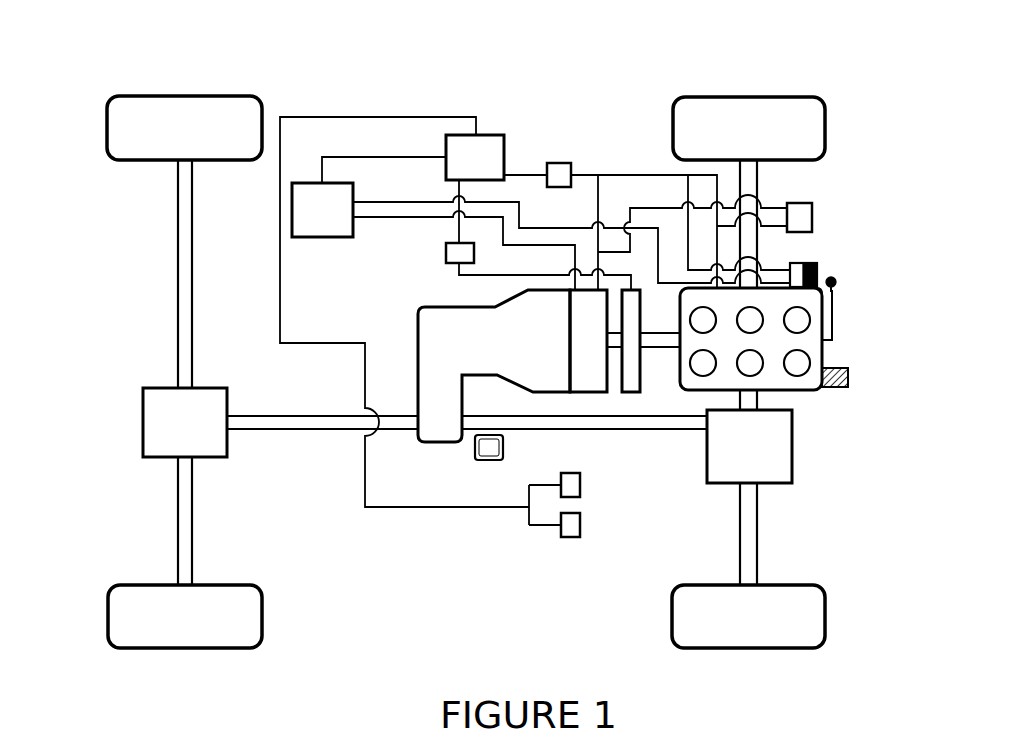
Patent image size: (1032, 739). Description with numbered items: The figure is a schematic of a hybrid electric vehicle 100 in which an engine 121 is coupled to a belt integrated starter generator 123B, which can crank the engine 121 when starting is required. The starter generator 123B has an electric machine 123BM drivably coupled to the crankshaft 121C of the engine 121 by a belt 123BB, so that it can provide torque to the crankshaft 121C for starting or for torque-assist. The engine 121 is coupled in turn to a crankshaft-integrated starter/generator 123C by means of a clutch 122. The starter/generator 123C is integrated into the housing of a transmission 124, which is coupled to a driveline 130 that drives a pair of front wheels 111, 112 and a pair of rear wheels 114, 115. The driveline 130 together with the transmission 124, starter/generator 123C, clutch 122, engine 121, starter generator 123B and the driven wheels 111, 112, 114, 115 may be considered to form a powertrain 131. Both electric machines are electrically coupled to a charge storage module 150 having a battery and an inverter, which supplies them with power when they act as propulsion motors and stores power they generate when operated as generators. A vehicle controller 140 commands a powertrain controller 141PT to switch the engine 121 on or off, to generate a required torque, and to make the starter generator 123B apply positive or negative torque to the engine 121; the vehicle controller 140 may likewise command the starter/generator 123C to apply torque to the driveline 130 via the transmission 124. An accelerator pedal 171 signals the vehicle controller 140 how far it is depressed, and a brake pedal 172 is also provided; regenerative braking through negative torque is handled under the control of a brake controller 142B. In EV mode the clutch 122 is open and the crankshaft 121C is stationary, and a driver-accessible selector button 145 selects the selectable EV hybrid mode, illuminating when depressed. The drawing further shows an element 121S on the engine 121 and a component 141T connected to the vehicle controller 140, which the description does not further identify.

The hybrid electric vehicle 100 is at (884, 62).
The front wheel 111 is at (812, 127).
The front wheel 112 is at (812, 632).
The rear wheel 114 is at (121, 105).
The rear wheel 115 is at (121, 628).
The engine 121 is at (812, 307).
The crankshaft 121C is at (678, 342).
The engine starter 121S is at (849, 380).
The clutch 122 is at (628, 396).
The belt integrated starter generator 123B is at (820, 266).
The belt 123BB is at (833, 327).
The electric machine 123BM is at (810, 275).
The crankshaft-integrated starter/generator 123C is at (585, 396).
The transmission 124 is at (443, 436).
The driveline 130 is at (315, 455).
The powertrain 131 is at (641, 456).
The vehicle controller 140 is at (490, 134).
The powertrain controller 141PT is at (558, 162).
The temperature sensor 141T is at (443, 262).
The brake controller 142B is at (813, 206).
The SEV selector button 145 is at (478, 461).
The charge storage module 150 is at (322, 224).
The accelerator pedal 171 is at (568, 538).
The brake pedal 172 is at (566, 497).